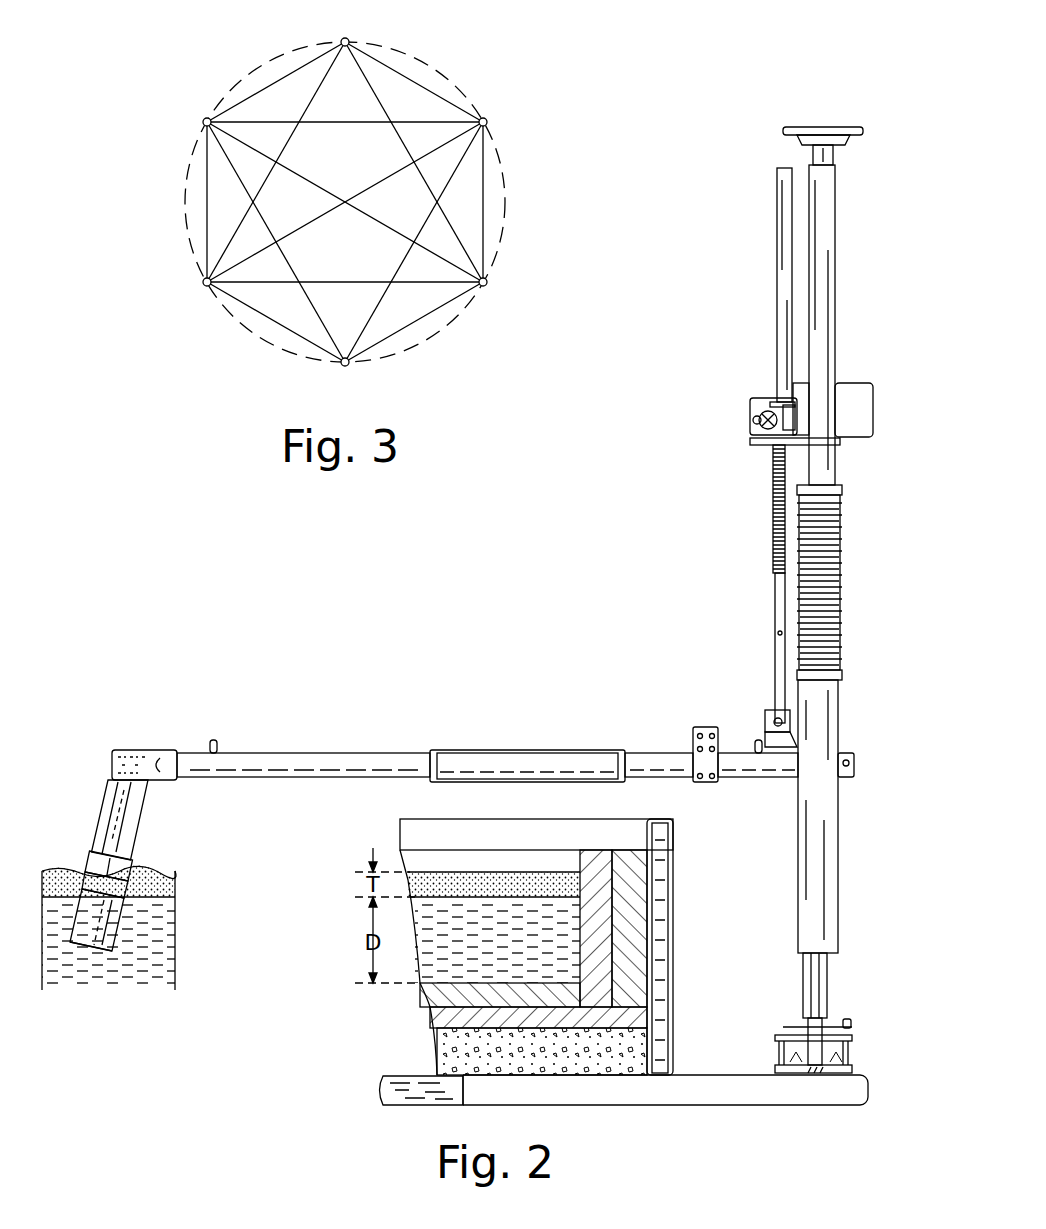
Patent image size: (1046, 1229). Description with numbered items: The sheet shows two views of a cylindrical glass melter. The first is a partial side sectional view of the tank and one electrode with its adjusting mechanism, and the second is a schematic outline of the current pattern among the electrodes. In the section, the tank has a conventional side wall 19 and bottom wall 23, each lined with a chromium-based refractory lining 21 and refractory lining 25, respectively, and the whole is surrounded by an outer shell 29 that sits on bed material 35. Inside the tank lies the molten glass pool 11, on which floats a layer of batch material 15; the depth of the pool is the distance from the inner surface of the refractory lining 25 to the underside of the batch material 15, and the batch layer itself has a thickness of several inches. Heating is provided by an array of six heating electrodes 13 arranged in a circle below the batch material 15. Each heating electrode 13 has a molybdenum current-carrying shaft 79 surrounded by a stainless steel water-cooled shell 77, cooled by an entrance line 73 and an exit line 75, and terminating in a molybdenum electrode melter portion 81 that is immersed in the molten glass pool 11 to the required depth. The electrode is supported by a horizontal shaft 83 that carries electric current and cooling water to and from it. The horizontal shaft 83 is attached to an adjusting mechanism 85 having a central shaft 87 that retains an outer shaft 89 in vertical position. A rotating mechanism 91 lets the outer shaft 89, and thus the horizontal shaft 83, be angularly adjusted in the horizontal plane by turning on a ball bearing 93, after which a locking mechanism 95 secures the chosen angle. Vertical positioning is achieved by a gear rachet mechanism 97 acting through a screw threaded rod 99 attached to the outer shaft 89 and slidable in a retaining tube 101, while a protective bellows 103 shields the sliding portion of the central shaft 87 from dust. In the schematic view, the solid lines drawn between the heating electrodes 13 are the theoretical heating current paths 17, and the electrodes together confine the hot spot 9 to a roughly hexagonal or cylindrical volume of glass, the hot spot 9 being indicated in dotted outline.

In FIG. 3, the hot spot 9 is at (492, 172).
In FIG. 2, the molten glass pool 11 is at (133, 949).
In FIG. 3, the heating electrode 13 is at (349, 39).
In FIG. 2, the heating electrode 13 is at (88, 956).
In FIG. 2, the batch material layer 15 is at (176, 880).
In FIG. 3, the traverse path 17 is at (312, 97).
In FIG. 2, the side wall 19 is at (636, 880).
In FIG. 2, the refractory lining 21 is at (597, 866).
In FIG. 2, the bottom wall 23 is at (447, 1022).
In FIG. 2, the refractory lining 25 is at (440, 998).
In FIG. 2, the shell 29 is at (662, 905).
In FIG. 2, the bed material 35 is at (455, 1053).
In FIG. 2, the entrance line 73 is at (108, 803).
In FIG. 2, the exit line 75 is at (143, 812).
In FIG. 2, the water-cooled shell 77 is at (103, 856).
In FIG. 2, the current-carrying shaft 79 is at (126, 828).
In FIG. 2, the electrode melter portion 81 is at (108, 945).
In FIG. 2, the horizontal shaft 83 is at (305, 753).
In FIG. 2, the adjusting mechanism 85 is at (855, 592).
In FIG. 2, the central shaft 87 is at (833, 158).
In FIG. 2, the outer shaft 89 is at (832, 842).
In FIG. 2, the rotating mechanism 91 is at (822, 1085).
In FIG. 2, the ball bearing 93 is at (812, 1073).
In FIG. 2, the locking mechanism 95 is at (838, 1025).
In FIG. 2, the gear rachet mechanism 97 is at (735, 406).
In FIG. 2, the screw threaded rod 99 is at (773, 503).
In FIG. 2, the retaining tube 101 is at (778, 290).
In FIG. 2, the protective bellows 103 is at (840, 528).